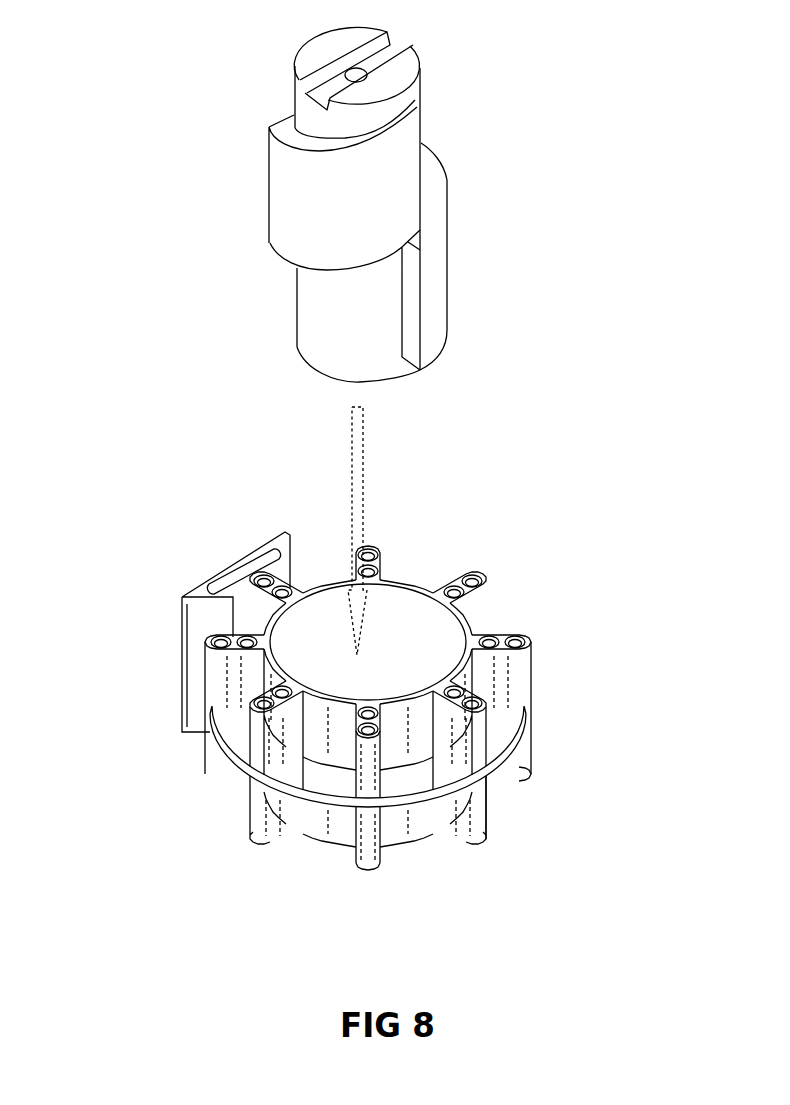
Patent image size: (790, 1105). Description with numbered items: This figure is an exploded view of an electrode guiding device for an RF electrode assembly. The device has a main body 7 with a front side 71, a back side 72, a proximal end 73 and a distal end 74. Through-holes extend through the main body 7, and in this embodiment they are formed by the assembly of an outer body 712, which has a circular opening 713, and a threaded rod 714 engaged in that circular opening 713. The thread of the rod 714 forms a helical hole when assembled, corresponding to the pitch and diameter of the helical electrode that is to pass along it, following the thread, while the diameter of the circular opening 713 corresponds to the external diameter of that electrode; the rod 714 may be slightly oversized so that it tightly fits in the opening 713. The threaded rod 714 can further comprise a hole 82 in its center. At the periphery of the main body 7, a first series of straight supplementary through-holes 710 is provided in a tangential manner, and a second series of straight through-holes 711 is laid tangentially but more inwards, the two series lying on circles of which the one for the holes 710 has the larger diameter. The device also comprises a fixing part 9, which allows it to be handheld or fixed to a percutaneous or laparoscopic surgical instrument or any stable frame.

The main body 7 is at (430, 677).
The fixing part 9 is at (199, 594).
The front side 71 is at (338, 341).
The back side 72 is at (441, 863).
The proximal end 73 is at (477, 848).
The distal end 74 is at (395, 575).
The hole 82 is at (365, 75).
The supplementary through-hole 710 is at (468, 578).
The second series of straight through-holes 711 is at (491, 638).
The outer body 712 is at (527, 707).
The circular opening 713 is at (416, 648).
The threaded rod 714 is at (307, 186).